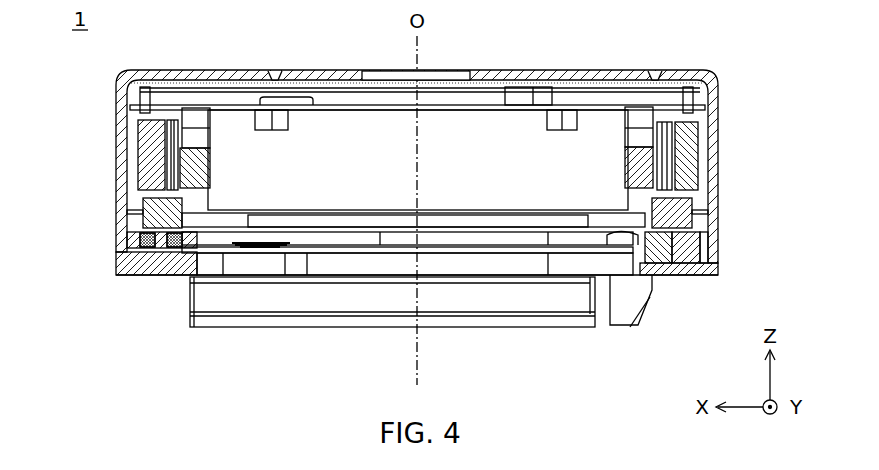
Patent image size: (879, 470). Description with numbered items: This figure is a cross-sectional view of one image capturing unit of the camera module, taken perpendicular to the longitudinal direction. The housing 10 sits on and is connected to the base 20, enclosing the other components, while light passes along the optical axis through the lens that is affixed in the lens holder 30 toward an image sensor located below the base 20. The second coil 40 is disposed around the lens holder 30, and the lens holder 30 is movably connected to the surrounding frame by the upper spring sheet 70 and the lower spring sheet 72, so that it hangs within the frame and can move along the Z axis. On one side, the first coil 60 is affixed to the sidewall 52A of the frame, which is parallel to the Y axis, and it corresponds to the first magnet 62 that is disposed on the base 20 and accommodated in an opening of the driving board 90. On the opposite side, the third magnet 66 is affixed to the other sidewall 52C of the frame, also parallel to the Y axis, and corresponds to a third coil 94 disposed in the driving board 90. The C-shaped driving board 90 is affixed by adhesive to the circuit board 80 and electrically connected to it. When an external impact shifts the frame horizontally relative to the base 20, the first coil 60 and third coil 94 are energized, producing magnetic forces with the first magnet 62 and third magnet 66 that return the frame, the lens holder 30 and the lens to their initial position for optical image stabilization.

The housing 10 is at (120, 80).
The base 20 is at (702, 276).
The lens holder 30 is at (522, 140).
The second coil 40 is at (645, 156).
The sidewall 52A is at (688, 138).
The sidewall 52C is at (147, 138).
The first coil 60 is at (690, 217).
The first magnet 62 is at (665, 264).
The third magnet 66 is at (150, 203).
The upper spring sheet 70 is at (240, 102).
The lower spring sheet 72 is at (333, 214).
The circuit board 80 is at (136, 251).
The driving board 90 is at (135, 237).
The third coil 94 is at (175, 256).